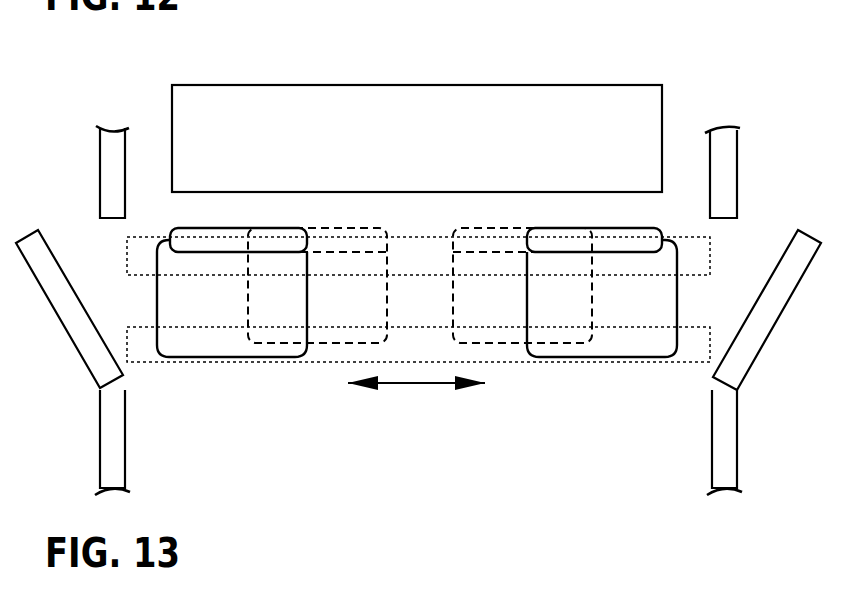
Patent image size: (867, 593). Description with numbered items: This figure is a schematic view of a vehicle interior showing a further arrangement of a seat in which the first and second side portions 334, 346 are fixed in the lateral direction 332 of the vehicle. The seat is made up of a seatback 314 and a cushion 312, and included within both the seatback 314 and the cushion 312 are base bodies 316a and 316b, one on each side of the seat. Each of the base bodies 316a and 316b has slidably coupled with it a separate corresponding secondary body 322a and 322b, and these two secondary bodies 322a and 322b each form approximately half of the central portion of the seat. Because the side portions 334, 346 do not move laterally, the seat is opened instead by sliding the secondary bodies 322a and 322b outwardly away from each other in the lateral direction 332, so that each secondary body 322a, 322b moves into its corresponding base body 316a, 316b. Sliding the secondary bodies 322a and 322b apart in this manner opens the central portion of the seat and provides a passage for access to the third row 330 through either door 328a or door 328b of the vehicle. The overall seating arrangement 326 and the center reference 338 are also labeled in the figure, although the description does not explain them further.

The cushion 312 is at (153, 295).
The seatback 314 is at (165, 230).
The base body 316a is at (640, 243).
The base body 316b is at (190, 243).
The secondary body 322a is at (507, 228).
The secondary body 322b is at (366, 228).
The seating assembly 326 is at (658, 57).
The door 328a is at (743, 252).
The door 328b is at (88, 243).
The third row 330 is at (425, 155).
The lateral direction 332 is at (413, 385).
The first side portion 334 is at (597, 228).
The center line 338 is at (437, 207).
The second side portion 346 is at (235, 228).